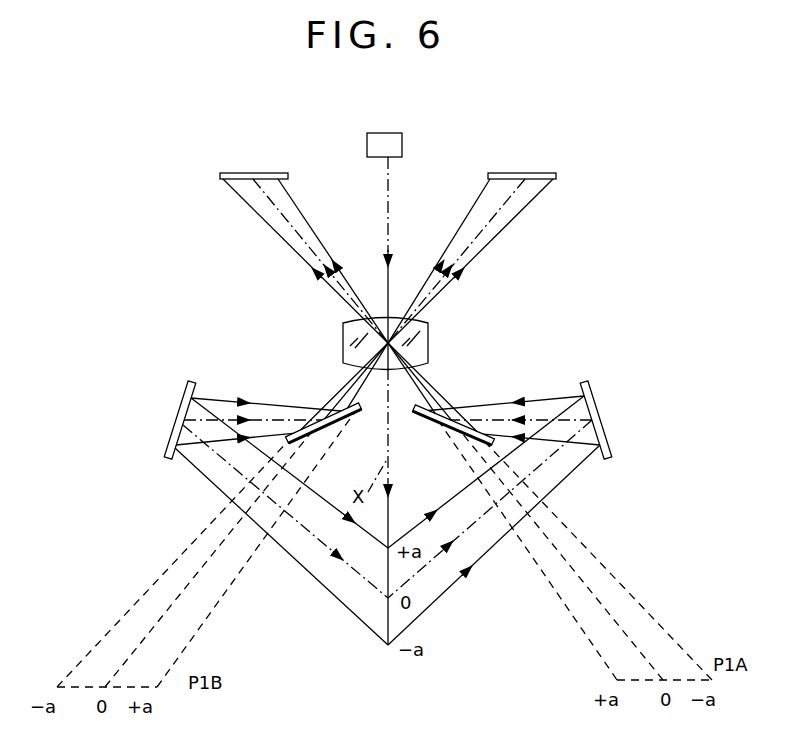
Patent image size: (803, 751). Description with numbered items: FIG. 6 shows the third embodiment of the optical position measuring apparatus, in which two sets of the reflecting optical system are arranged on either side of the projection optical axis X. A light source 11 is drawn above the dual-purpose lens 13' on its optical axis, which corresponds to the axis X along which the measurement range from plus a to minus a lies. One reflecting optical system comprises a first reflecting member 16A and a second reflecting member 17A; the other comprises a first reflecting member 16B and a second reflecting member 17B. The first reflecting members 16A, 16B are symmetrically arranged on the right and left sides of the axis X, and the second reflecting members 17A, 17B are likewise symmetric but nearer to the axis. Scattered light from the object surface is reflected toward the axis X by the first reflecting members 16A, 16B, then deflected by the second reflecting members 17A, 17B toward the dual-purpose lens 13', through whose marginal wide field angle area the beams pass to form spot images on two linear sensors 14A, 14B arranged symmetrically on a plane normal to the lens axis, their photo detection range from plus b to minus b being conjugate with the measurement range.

The light source 11 is at (402, 143).
The dual-purpose lens 13' is at (416, 344).
The linear sensor 14A is at (221, 182).
The linear sensor 14B is at (556, 182).
The first reflecting member 16A is at (611, 458).
The first reflecting member 16B is at (165, 462).
The second reflecting member 17A is at (419, 414).
The second reflecting member 17B is at (351, 417).